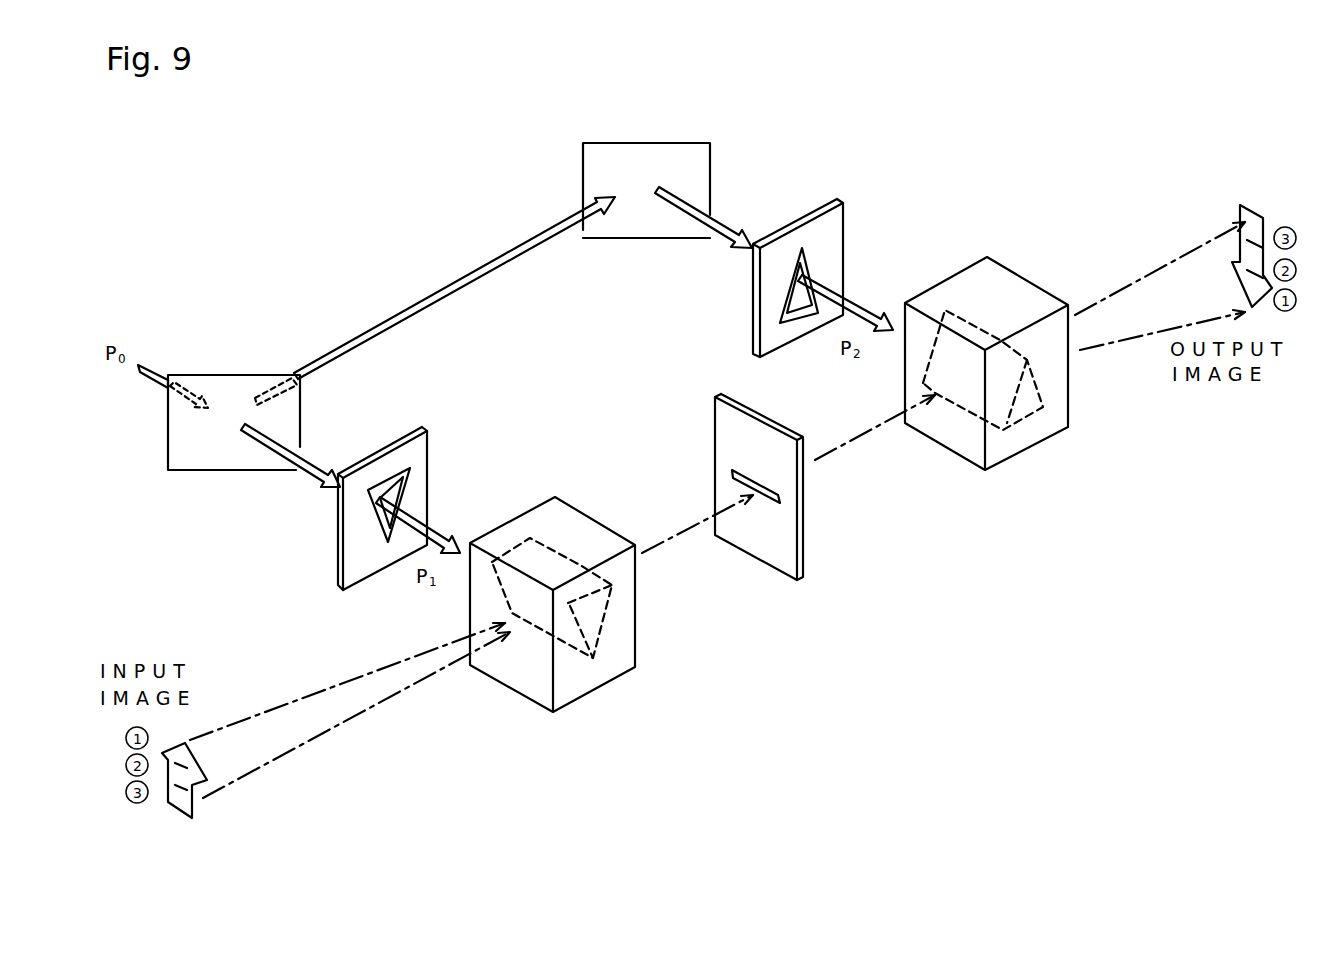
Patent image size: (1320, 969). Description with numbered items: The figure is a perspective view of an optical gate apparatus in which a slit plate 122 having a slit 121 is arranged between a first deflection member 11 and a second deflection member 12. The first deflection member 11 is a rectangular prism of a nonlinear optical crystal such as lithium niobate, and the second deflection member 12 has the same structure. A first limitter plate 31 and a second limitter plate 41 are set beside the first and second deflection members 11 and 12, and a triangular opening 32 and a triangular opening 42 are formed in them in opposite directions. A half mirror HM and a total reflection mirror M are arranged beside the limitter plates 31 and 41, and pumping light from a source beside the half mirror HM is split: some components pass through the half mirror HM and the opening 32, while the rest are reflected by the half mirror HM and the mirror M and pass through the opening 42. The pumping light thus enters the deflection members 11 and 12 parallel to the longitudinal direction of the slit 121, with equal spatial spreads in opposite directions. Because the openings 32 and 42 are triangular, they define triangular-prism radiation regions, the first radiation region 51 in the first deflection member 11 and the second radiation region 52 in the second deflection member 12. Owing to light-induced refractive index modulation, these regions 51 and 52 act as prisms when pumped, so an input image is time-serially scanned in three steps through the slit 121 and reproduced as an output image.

The half mirror HM is at (232, 375).
The total reflection mirror M is at (690, 143).
The first deflection member 11 is at (575, 685).
The second deflection member 12 is at (965, 452).
The first limitter plate 31 is at (418, 428).
The triangular opening 32 is at (410, 475).
The second limitter plate 41 is at (835, 203).
The triangular opening 42 is at (780, 310).
The first radiation region 51 is at (603, 625).
The second radiation region 52 is at (1030, 410).
The slit 121 is at (782, 495).
The slit plate 122 is at (797, 568).